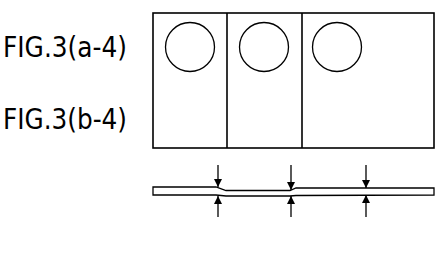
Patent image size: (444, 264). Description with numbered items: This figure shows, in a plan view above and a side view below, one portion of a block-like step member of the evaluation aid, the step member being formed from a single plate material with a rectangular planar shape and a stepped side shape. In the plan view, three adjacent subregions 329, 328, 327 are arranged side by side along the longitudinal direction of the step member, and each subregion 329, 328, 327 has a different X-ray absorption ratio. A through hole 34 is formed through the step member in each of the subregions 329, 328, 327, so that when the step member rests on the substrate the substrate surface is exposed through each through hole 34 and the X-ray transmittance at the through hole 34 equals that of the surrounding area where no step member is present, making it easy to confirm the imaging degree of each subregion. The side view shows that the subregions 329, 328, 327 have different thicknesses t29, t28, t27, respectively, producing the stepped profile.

The through hole 34 is at (205, 60).
The subregion 329 is at (213, 125).
The subregion 328 is at (286, 125).
The subregion 327 is at (358, 125).
The thickness t29 is at (220, 196).
The thickness t28 is at (293, 196).
The thickness t27 is at (368, 196).